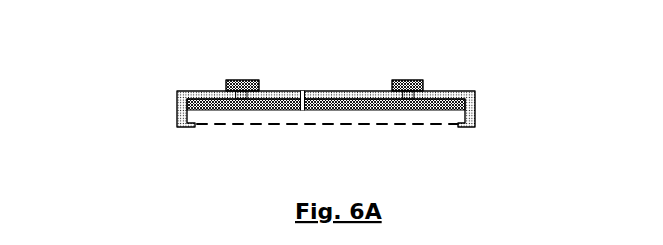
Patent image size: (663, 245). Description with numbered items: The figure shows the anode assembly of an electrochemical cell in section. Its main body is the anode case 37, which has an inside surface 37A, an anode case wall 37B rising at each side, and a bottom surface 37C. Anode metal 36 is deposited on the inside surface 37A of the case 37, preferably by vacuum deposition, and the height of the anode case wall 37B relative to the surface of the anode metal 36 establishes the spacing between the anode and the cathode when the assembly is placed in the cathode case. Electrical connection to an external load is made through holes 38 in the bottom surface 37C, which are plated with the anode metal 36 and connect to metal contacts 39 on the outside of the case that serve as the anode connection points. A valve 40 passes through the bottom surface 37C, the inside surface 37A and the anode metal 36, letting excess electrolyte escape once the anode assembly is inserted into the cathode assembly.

The anode metal 36 is at (285, 114).
The anode case 37 is at (176, 122).
The inside surface 37A is at (271, 96).
The anode case wall 37B is at (175, 107).
The bottom surface 37C is at (298, 88).
The holes 38 is at (424, 95).
The metal contacts 39 is at (222, 87).
The valve 40 is at (308, 87).